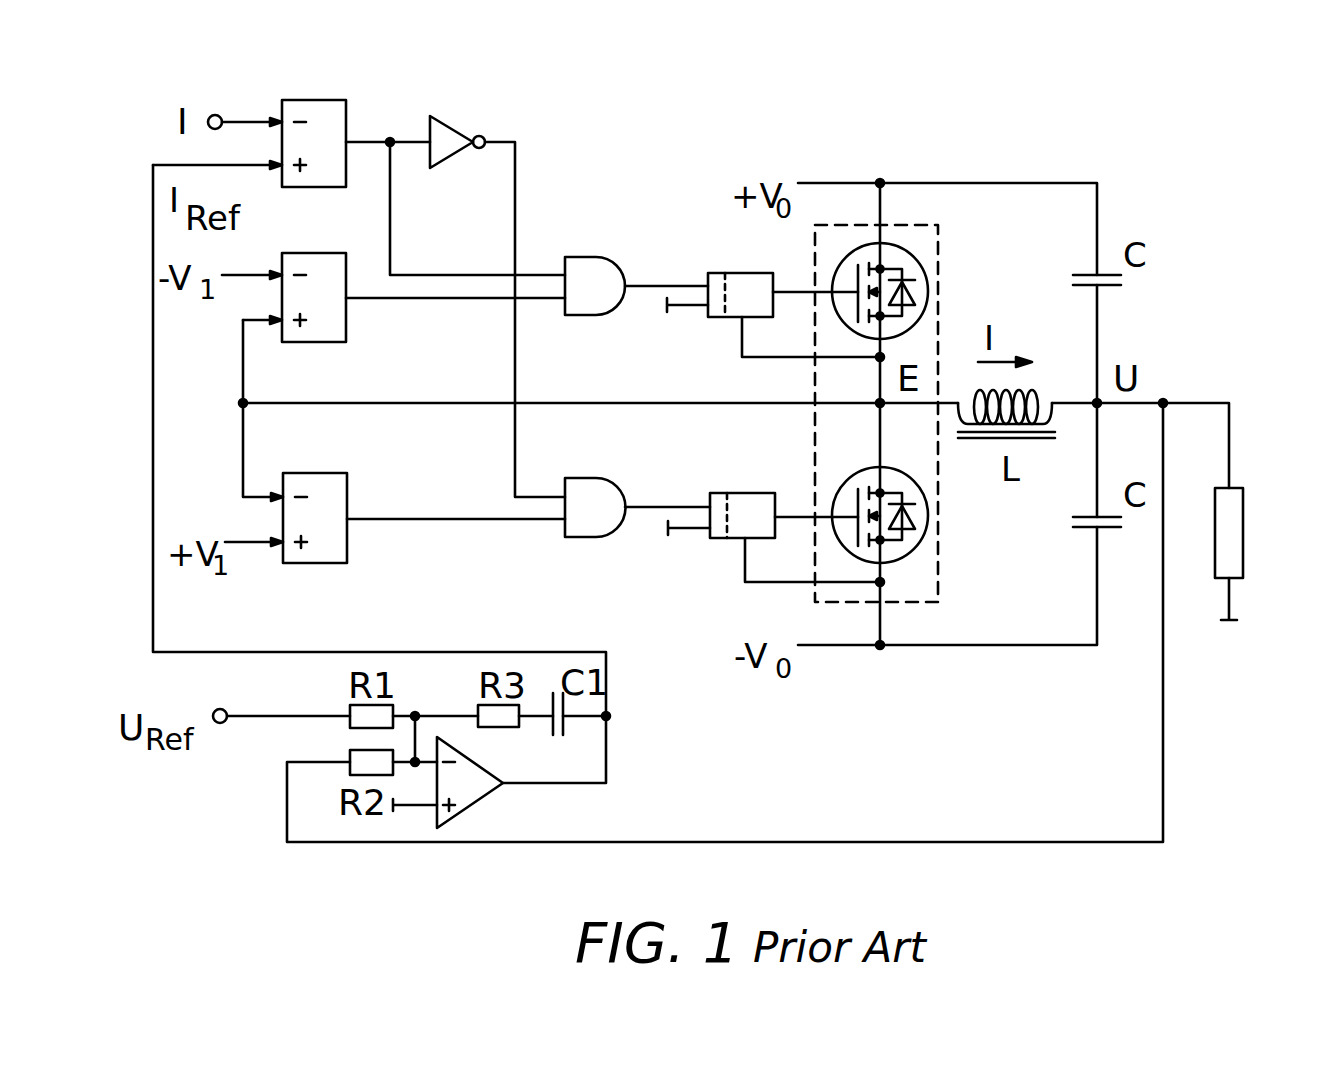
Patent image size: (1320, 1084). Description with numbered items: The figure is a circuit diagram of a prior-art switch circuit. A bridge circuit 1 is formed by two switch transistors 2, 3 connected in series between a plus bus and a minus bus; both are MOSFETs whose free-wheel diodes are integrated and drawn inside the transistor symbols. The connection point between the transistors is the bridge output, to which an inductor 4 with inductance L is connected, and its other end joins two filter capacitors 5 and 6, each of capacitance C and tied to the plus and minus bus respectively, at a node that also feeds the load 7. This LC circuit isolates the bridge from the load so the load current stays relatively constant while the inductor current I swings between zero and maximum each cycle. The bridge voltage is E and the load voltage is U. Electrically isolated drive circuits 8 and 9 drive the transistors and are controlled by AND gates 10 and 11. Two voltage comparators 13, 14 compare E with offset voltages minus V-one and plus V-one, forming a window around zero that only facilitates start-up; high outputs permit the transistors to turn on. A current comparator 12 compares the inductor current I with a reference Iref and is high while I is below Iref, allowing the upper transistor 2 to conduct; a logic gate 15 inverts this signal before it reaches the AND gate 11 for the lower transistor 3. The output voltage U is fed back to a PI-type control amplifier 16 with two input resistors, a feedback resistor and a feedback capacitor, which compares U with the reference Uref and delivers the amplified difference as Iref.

The bridge circuit 1 is at (938, 242).
The switch transistor 2 is at (928, 291).
The switch transistor 3 is at (928, 540).
The inductor 4 is at (1038, 390).
The filter capacitor 5 is at (1112, 288).
The filter capacitor 6 is at (1110, 530).
The load 7 is at (1243, 548).
The drive circuit 8 is at (722, 317).
The drive circuit 9 is at (748, 493).
The AND gate 10 is at (588, 315).
The AND gate 11 is at (582, 478).
The current comparator 12 is at (346, 110).
The voltage comparator 13 is at (346, 330).
The voltage comparator 14 is at (347, 488).
The logic gate 15 is at (450, 120).
The control amplifier 16 is at (475, 808).